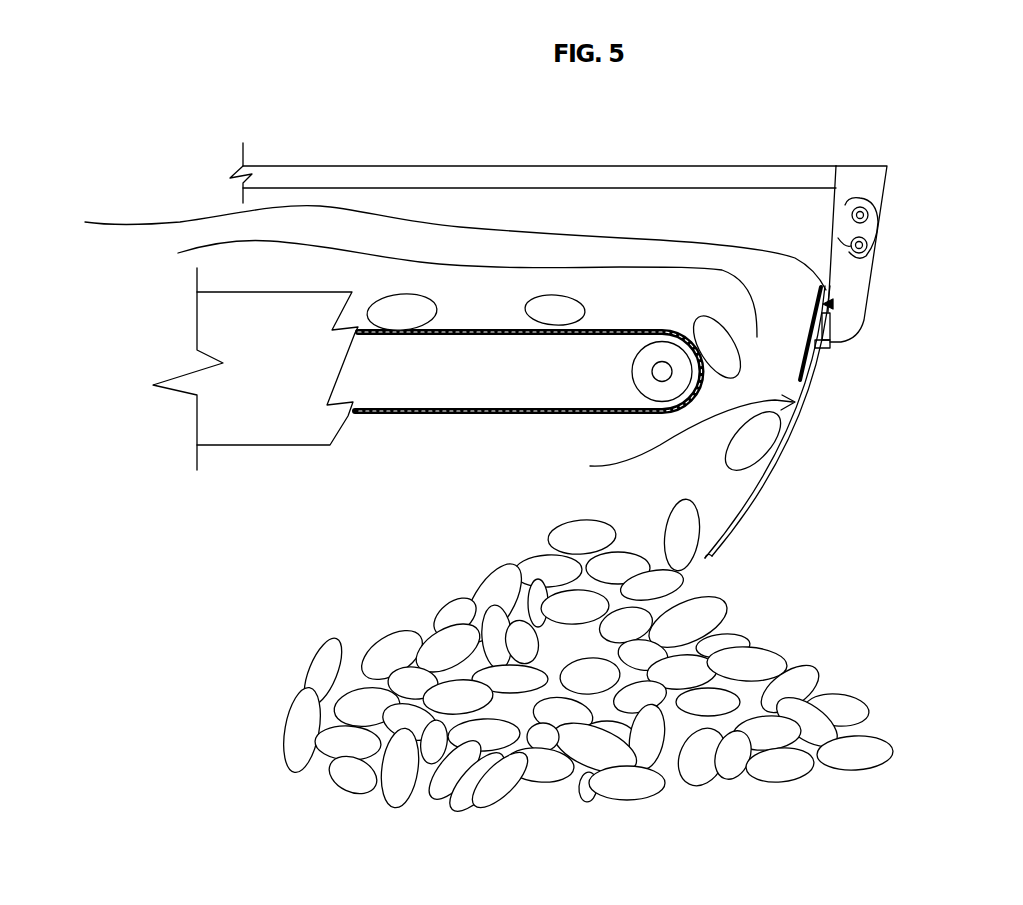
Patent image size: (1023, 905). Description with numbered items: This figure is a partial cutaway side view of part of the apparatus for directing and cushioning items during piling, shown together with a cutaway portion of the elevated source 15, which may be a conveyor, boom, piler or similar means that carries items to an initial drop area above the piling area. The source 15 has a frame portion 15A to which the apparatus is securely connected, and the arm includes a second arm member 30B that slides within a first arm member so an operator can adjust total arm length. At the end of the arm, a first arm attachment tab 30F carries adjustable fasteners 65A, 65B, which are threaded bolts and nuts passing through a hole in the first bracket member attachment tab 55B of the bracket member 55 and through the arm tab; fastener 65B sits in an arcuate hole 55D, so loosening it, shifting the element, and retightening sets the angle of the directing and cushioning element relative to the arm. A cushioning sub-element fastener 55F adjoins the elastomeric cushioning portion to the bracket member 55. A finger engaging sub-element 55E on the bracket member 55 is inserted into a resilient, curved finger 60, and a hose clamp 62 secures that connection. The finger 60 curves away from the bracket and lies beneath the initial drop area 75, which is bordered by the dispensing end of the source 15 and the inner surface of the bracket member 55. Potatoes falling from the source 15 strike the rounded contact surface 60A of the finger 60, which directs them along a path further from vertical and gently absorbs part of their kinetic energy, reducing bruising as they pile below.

The second arm member 30B is at (545, 165).
The first arm attachment tab 30F is at (867, 182).
The bracket member 55 is at (439, 248).
The first bracket member attachment tab 55B is at (850, 276).
The arcuate hole 55D is at (848, 246).
The finger engaging sub-element 55E is at (830, 345).
The cushioning sub-element fastener 55F is at (833, 304).
The adjustable fastener 65A is at (866, 212).
The adjustable fastener 65B is at (867, 243).
The hose clamp 62 is at (830, 348).
The initial drop area 75 is at (452, 289).
The elevated source 15 is at (410, 412).
The frame portion 15A is at (247, 445).
The finger 60 is at (707, 560).
The contact surface 60A is at (670, 438).